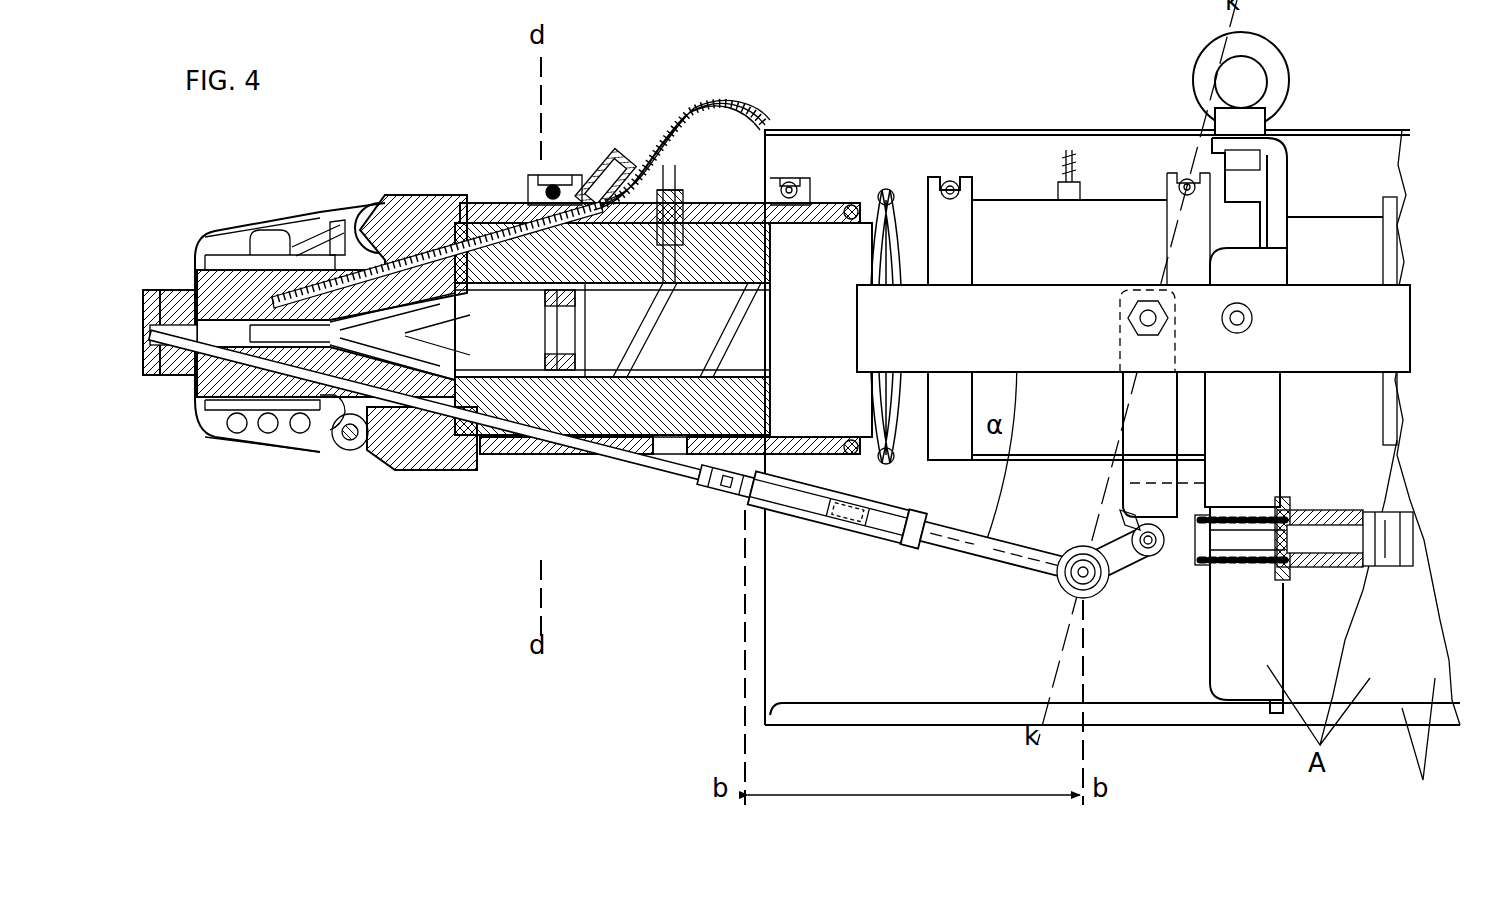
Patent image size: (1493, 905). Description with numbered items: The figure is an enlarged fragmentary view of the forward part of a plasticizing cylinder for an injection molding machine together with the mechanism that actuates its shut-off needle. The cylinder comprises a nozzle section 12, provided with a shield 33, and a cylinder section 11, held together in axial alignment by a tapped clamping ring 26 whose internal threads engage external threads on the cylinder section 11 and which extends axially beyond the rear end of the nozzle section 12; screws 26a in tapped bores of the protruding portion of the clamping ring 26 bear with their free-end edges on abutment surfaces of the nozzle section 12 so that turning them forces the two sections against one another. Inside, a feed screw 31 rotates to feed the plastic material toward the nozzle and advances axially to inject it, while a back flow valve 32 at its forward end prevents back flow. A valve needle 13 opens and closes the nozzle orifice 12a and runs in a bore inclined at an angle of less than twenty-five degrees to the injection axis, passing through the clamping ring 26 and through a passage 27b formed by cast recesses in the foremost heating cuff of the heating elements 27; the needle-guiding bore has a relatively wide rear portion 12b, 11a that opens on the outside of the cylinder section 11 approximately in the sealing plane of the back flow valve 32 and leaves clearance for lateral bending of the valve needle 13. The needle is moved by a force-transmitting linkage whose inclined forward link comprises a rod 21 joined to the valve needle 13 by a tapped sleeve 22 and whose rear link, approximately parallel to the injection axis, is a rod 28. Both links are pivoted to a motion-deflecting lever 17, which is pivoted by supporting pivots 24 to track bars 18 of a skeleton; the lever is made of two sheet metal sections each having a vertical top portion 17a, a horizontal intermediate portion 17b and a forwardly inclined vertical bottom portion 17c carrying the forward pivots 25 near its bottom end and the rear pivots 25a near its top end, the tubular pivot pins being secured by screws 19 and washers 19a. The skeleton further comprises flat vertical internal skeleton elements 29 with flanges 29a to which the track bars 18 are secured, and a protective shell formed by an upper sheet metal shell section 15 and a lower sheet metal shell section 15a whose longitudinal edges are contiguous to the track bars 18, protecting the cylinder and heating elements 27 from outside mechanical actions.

The cylinder section 11 is at (767, 200).
The rear portion of the needle-guiding bore 11a is at (546, 456).
The nozzle section 12 is at (194, 262).
The nozzle orifice 12a is at (145, 345).
The rear portion of the needle-guiding bore 12b is at (340, 400).
The valve needle 13 is at (178, 345).
The upper sheet metal shell section 15 is at (1018, 163).
The lower sheet metal shell section 15a is at (1429, 744).
The motion-deflecting lever 17 is at (1180, 424).
The vertical top portion 17a is at (1172, 428).
The horizontal intermediate portion 17b is at (1130, 483).
The forwardly inclined vertical bottom portion 17c is at (1160, 507).
The track bars 18 is at (1350, 341).
The screws 19 is at (1153, 545).
The washers 19a is at (1107, 490).
The rod 21 is at (965, 545).
The tapped sleeve 22 is at (808, 508).
The supporting pivots 24 is at (1123, 327).
The forward pivots 25 is at (1078, 590).
The pivots 25a is at (1128, 522).
The clamping ring 26 is at (440, 195).
The screws 26a is at (355, 200).
The heating elements 27 is at (812, 247).
The passage 27b is at (618, 456).
The rod 28 is at (1413, 552).
The internal skeleton elements 29 is at (1280, 175).
The flanges 29a is at (1264, 646).
The feed screw 31 is at (683, 346).
The back flow valve 32 is at (527, 307).
The shield 33 is at (292, 442).